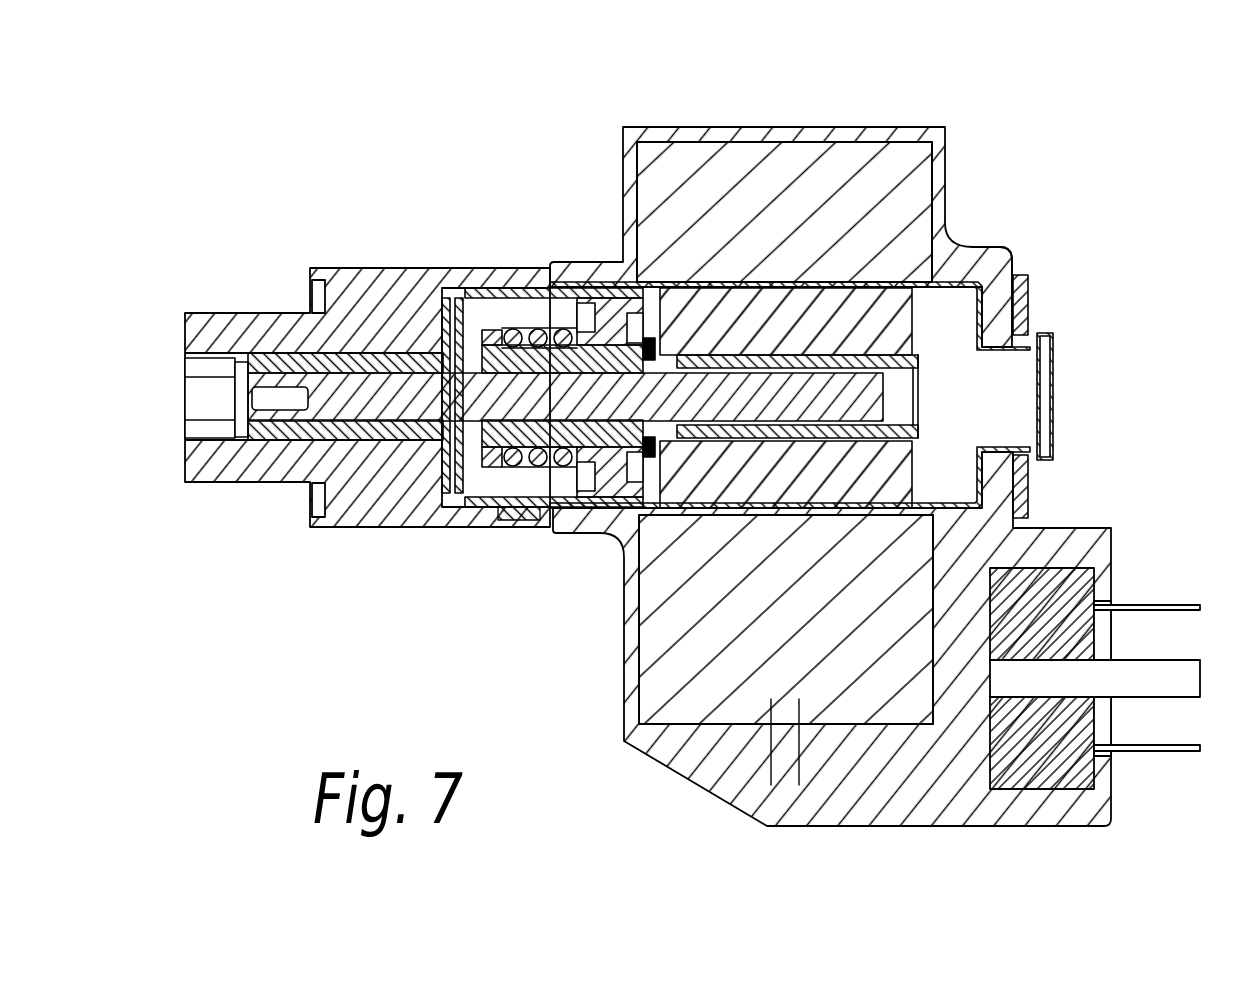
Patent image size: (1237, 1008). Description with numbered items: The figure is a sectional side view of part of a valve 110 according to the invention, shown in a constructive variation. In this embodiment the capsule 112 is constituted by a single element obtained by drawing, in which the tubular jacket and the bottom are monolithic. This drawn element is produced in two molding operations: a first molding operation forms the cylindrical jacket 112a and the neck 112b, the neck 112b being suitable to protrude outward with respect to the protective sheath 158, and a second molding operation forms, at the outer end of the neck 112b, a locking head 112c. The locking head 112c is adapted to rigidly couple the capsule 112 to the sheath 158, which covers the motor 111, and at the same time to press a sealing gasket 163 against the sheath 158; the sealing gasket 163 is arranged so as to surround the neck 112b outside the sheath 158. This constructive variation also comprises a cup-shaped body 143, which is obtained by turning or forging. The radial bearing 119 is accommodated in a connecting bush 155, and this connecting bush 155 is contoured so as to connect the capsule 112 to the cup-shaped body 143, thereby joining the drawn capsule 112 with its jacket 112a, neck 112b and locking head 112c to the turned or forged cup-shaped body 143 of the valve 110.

The valve 110 is at (320, 211).
The motor 111 is at (841, 826).
The capsule 112 is at (858, 277).
The cylindrical jacket 112a is at (750, 280).
The neck 112b is at (1000, 250).
The locking head 112c is at (1040, 333).
The radial bearing 119 is at (607, 294).
The cup-shaped body 143 is at (385, 268).
The connecting bush 155 is at (511, 513).
The protective sheath 158 is at (975, 548).
The sealing gasket 163 is at (1027, 492).